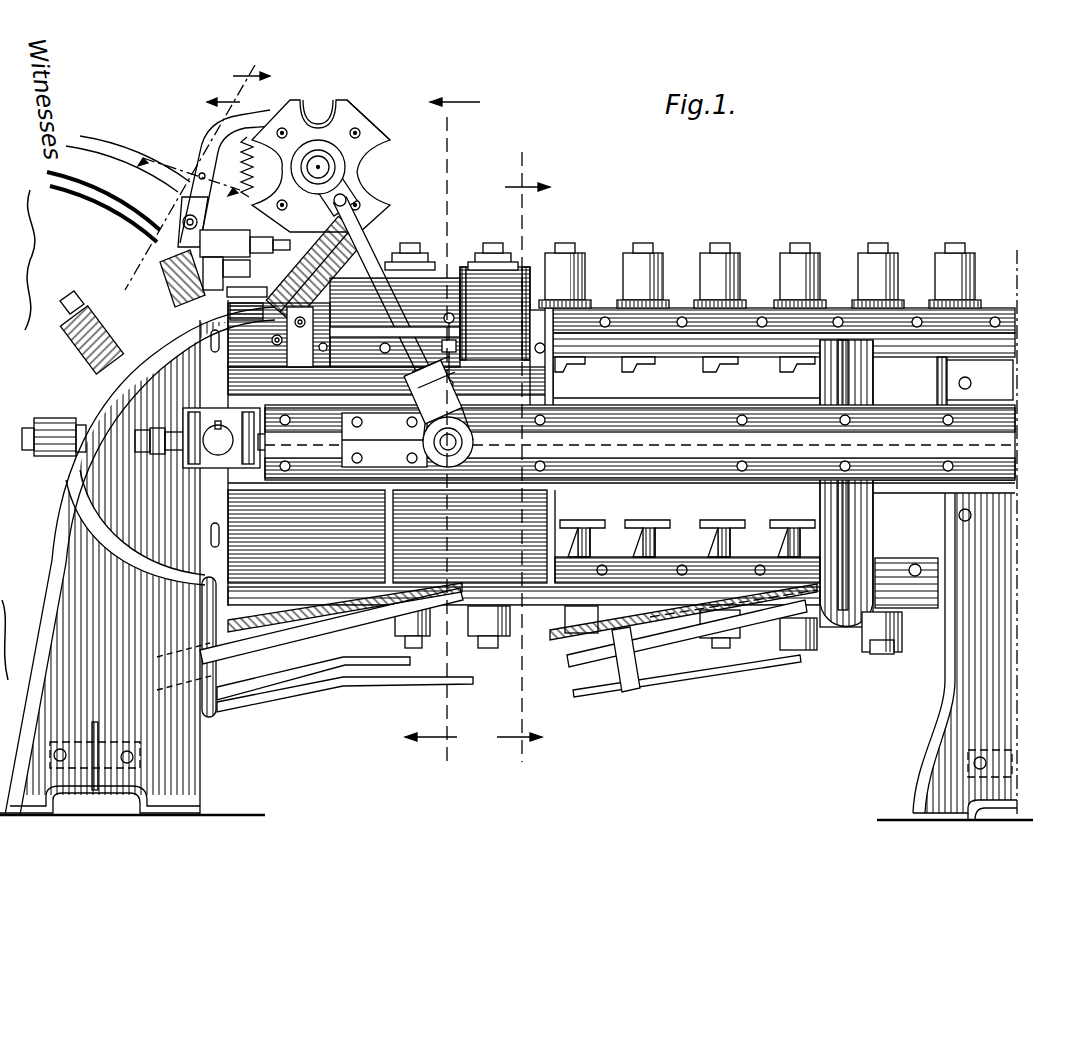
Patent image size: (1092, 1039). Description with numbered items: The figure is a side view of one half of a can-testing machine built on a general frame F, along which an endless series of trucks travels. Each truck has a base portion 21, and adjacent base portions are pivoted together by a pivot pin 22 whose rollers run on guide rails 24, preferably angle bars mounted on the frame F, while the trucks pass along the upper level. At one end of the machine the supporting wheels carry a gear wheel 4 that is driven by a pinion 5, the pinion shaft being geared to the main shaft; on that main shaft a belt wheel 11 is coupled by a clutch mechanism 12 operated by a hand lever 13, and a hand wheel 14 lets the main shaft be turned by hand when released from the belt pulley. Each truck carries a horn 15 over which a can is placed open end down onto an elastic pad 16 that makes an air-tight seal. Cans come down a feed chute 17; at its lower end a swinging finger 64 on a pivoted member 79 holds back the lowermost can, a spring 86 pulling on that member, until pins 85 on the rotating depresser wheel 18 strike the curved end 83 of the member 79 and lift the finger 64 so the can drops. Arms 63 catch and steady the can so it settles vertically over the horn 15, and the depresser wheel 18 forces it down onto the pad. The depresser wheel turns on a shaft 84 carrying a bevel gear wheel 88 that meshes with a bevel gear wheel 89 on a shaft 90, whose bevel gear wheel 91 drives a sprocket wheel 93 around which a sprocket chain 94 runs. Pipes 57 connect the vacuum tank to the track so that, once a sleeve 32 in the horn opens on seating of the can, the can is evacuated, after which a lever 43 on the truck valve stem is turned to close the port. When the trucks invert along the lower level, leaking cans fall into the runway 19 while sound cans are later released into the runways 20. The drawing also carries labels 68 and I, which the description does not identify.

The gear wheel 4 is at (442, 421).
The pinion 5 is at (523, 457).
The belt wheel 11 is at (228, 92).
The clutch mechanism 12 is at (197, 170).
The hand lever 13 is at (148, 157).
The hand wheel 14 is at (174, 278).
The horn 15 is at (585, 258).
The elastic pad 16 is at (745, 305).
The feed chute 17 is at (97, 150).
The rotating depresser wheel 18 is at (375, 130).
The runway 19 is at (713, 680).
The runways 20 is at (403, 690).
The base portion 21 is at (608, 343).
The pivot pin 22 is at (607, 316).
The guide rails 24 is at (710, 348).
The sleeve 32 is at (500, 245).
The lever 43 is at (730, 365).
The pipes 57 is at (455, 366).
The arm 63 is at (275, 205).
The swinging finger 64 is at (212, 192).
The block 68 is at (245, 274).
The member 79 is at (205, 152).
The curved end 83 is at (305, 110).
The shaft 84 is at (385, 145).
The pins 85 is at (357, 122).
The spring 86 is at (285, 128).
The bevel gear wheel 88 is at (347, 164).
The bevel gear wheel 89 is at (370, 186).
The shaft 90 is at (385, 303).
The bevel gear wheel 91 is at (465, 405).
The sprocket wheel 93 is at (478, 445).
The sprocket chain 94 is at (730, 428).
The rail I is at (648, 318).
The frame F is at (175, 765).